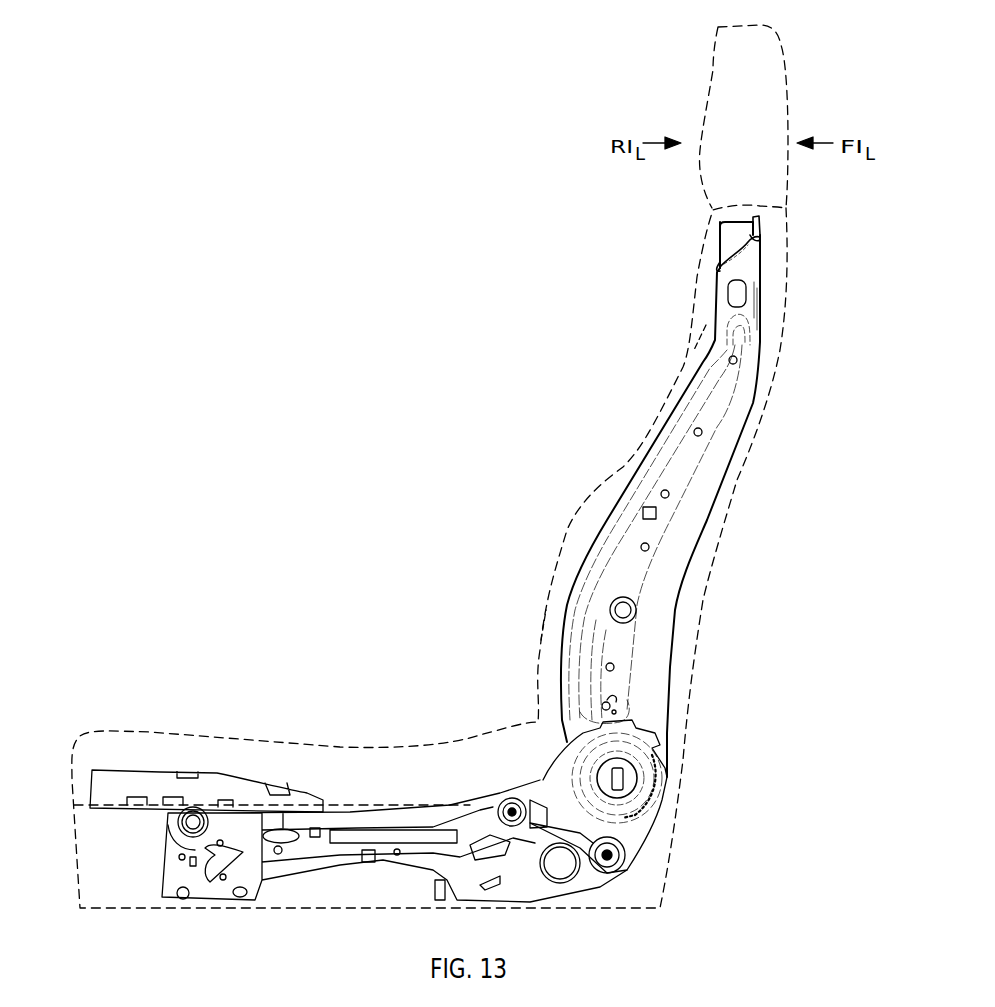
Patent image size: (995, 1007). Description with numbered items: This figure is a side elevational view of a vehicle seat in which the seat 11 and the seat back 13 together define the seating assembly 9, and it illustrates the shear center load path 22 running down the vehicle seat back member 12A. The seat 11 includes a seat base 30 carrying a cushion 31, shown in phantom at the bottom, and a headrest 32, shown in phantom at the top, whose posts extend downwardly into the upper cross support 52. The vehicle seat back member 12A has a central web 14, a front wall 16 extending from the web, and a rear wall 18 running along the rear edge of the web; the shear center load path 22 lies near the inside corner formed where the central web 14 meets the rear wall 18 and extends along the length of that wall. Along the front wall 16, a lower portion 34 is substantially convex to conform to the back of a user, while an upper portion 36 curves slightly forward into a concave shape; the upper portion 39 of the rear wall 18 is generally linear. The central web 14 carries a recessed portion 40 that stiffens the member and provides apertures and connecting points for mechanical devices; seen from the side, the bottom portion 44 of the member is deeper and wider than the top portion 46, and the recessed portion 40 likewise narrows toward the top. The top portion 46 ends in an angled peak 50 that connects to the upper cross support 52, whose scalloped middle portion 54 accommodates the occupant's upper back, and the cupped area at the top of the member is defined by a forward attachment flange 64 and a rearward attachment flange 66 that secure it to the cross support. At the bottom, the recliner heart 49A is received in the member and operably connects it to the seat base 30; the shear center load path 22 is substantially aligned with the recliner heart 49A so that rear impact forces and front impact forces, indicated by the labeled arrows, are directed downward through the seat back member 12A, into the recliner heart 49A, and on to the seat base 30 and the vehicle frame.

The seating assembly 9 is at (368, 533).
The seat 11 is at (372, 735).
The vehicle seat back member 12A is at (690, 568).
The seat back 13 is at (613, 448).
The central web 14 is at (707, 493).
The front wall 16 is at (590, 536).
The rear wall 18 is at (676, 605).
The shear center load path 22 is at (650, 665).
The seat base 30 is at (308, 790).
The cushion 31 is at (222, 732).
The headrest 32 is at (727, 103).
The lower portion of the front wall 34 is at (575, 642).
The upper portion of the front wall 36 is at (702, 373).
The upper portion of the rear wall 39 is at (740, 266).
The recessed portion 40 is at (652, 528).
The bottom portion 44 is at (549, 604).
The top portion 46 is at (707, 325).
The recliner heart 49A is at (632, 781).
The angled peak 50 is at (735, 256).
The upper cross support 52 is at (738, 238).
The scalloped middle portion 54 is at (720, 230).
The forward attachment flange 64 is at (714, 275).
The rearward attachment flange 66 is at (762, 240).